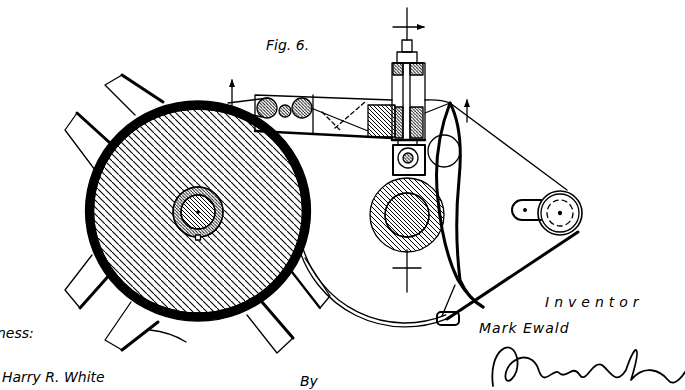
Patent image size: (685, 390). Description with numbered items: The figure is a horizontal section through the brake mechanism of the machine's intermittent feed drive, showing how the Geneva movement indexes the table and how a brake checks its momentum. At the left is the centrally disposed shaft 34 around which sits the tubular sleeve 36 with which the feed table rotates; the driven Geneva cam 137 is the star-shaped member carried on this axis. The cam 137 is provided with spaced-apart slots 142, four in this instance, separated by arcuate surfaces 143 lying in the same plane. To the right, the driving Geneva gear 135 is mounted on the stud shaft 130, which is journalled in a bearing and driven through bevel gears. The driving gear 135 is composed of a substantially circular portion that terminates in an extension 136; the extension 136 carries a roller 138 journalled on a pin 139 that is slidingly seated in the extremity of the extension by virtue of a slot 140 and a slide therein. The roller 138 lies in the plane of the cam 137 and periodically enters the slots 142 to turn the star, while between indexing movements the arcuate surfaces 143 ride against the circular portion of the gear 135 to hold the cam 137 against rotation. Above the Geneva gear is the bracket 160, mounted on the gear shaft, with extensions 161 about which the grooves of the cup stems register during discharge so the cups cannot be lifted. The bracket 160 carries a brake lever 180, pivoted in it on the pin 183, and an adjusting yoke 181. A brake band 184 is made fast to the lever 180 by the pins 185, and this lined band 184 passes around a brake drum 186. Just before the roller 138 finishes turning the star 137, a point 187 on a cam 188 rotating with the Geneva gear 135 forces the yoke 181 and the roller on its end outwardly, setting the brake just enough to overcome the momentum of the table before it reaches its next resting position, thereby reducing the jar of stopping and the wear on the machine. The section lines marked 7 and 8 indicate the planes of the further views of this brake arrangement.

The shaft 34 is at (166, 191).
The tubular sleeve 36 is at (175, 205).
The driven Geneva cam 137 is at (110, 213).
The brake band 184 is at (173, 103).
The slots 142 is at (100, 115).
The arcuate surfaces 143 is at (250, 323).
The brake drum 186 is at (277, 353).
The section line 7 is at (220, 92).
The section line 8 is at (408, 155).
The pin 183 is at (292, 99).
The pins 185 is at (266, 98).
The brake lever 180 is at (256, 157).
The adjusting yoke 181 is at (425, 85).
The cam 188 is at (398, 165).
The bracket 160 is at (444, 151).
The stud shaft 130 is at (508, 211).
The point 187 is at (448, 240).
The extension 136 is at (530, 176).
The extensions 161 is at (442, 323).
The driving Geneva gear 135 is at (382, 300).
The pin 139 is at (580, 198).
The roller 138 is at (584, 212).
The slot 140 is at (527, 217).